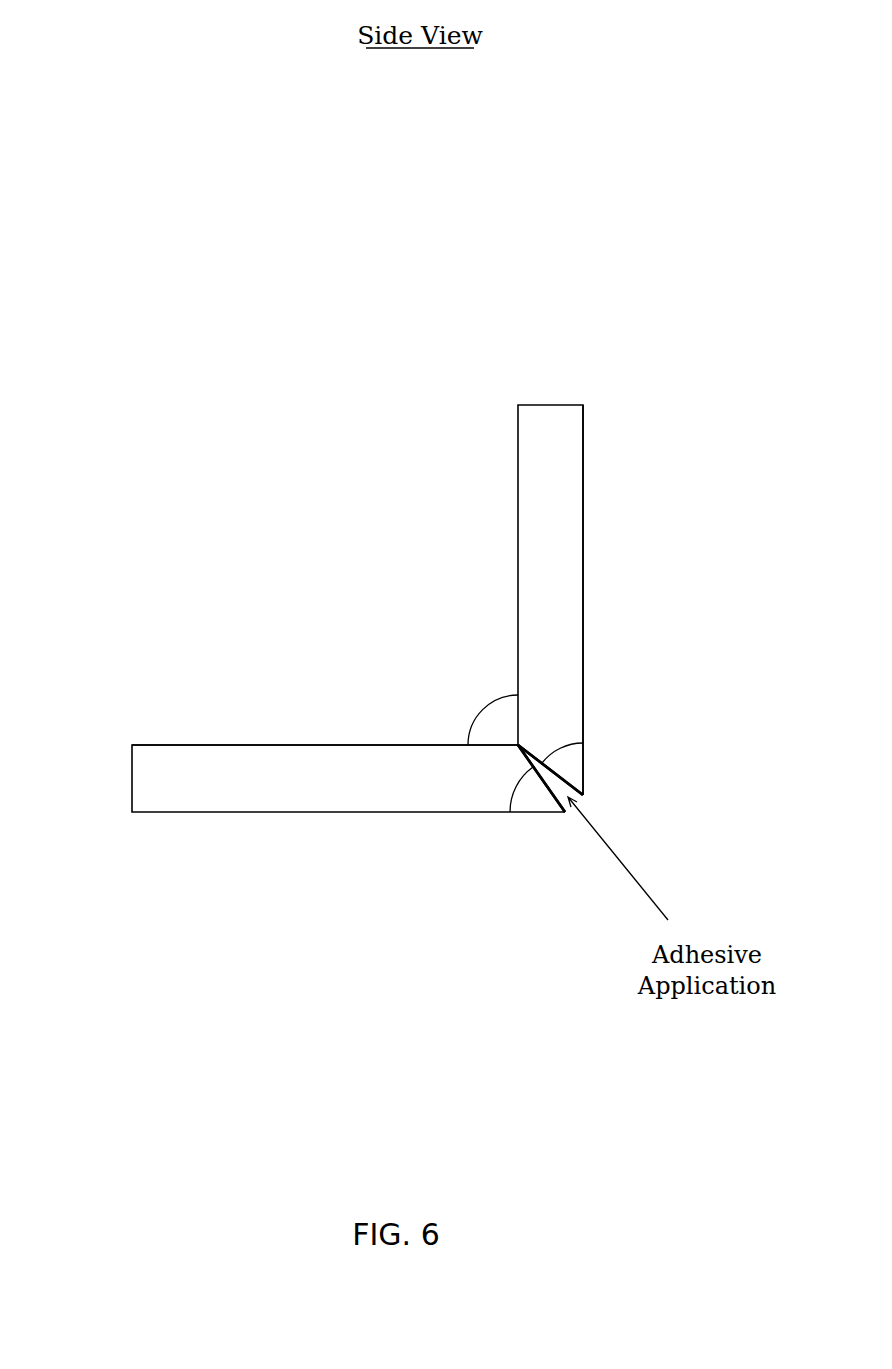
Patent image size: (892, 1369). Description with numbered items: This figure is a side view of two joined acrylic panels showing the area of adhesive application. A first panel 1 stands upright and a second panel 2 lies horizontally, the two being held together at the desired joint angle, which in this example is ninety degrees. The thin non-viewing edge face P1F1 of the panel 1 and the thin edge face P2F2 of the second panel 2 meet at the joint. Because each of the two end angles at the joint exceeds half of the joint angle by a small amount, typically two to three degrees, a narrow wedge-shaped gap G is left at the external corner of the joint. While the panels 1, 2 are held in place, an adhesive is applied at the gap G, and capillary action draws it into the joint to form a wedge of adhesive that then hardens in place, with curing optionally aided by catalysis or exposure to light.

The panel 1 is at (557, 462).
The second panel 2 is at (202, 778).
The non-viewing thin edge face of the first panel P1F1 is at (548, 557).
The thin edge face of the second panel P2F2 is at (335, 785).
The gap G is at (558, 789).